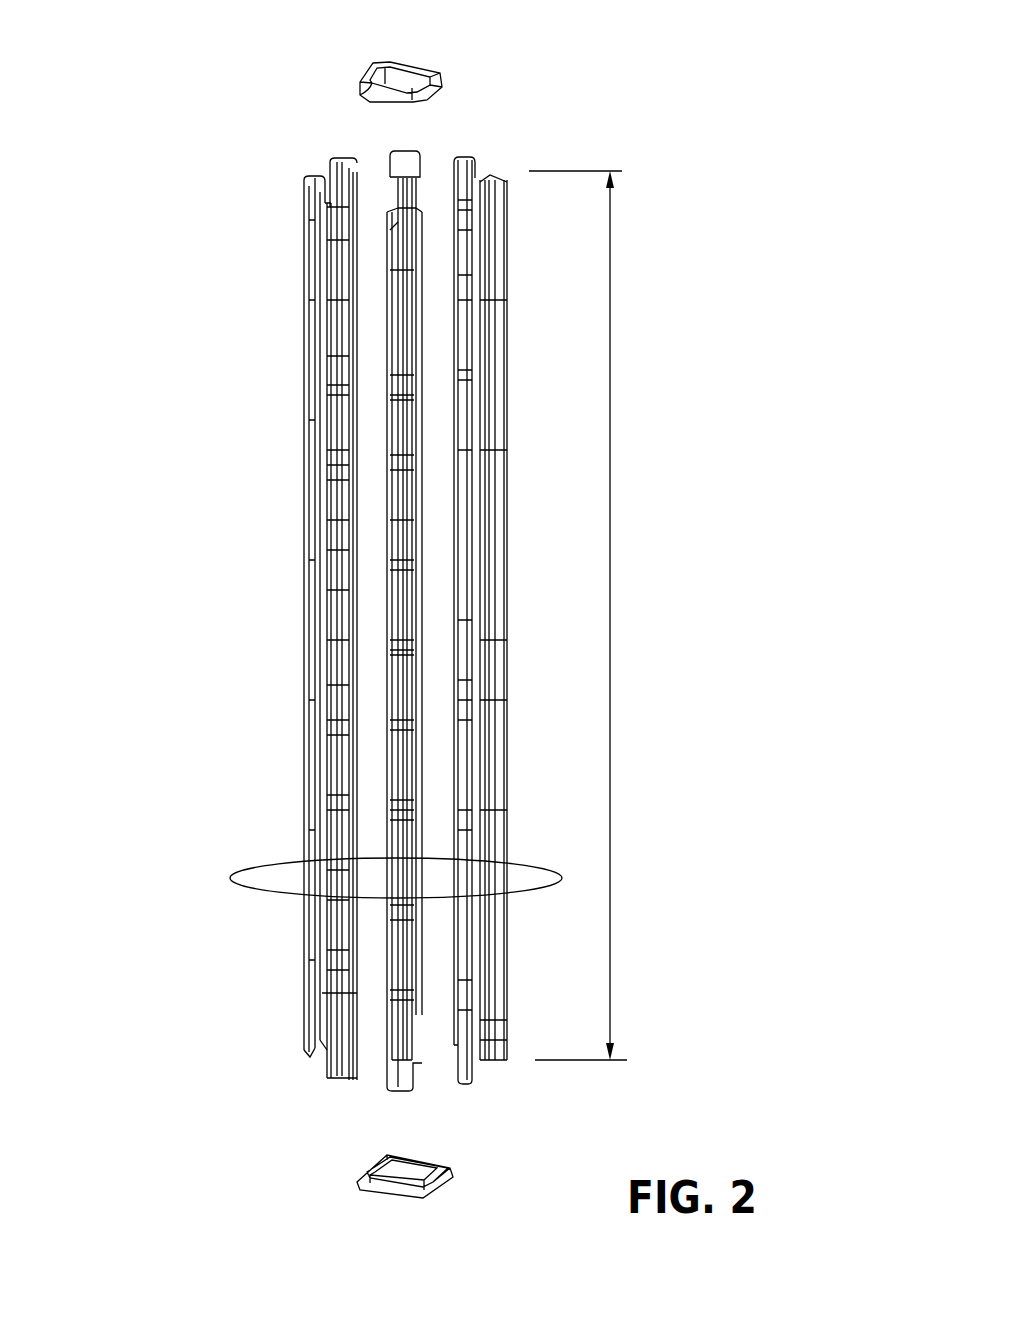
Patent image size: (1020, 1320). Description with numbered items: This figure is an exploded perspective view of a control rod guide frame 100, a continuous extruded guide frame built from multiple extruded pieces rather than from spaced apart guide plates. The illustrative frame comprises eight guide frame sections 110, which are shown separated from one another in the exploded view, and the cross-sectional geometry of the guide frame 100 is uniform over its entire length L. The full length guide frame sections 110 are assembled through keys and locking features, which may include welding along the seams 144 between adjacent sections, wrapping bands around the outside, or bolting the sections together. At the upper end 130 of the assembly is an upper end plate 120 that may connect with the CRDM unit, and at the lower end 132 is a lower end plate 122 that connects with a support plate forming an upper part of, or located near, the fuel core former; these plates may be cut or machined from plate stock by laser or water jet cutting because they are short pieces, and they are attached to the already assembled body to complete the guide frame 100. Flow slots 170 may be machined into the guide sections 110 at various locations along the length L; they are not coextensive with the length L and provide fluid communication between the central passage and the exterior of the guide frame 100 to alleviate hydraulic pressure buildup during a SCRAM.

The control rod guide frame 100 is at (238, 590).
The guide frame section 110 is at (230, 878).
The upper end plate 120 is at (441, 69).
The lower end plate 122 is at (365, 1170).
The upper end 130 is at (418, 140).
The lower end 132 is at (400, 1095).
The seam 144 is at (380, 802).
The flow slot 170 is at (380, 525).
The length L is at (612, 600).